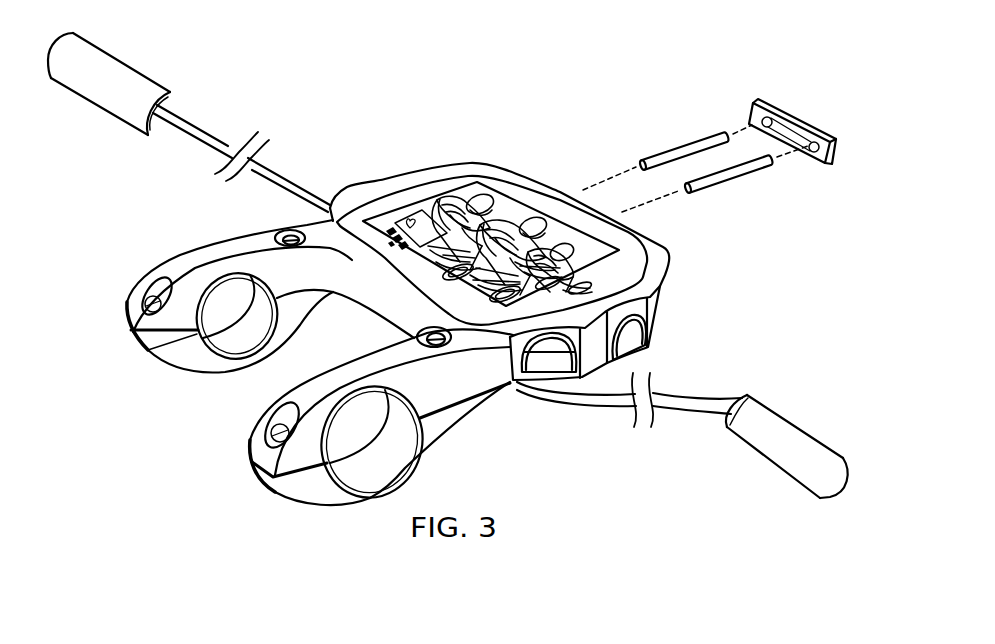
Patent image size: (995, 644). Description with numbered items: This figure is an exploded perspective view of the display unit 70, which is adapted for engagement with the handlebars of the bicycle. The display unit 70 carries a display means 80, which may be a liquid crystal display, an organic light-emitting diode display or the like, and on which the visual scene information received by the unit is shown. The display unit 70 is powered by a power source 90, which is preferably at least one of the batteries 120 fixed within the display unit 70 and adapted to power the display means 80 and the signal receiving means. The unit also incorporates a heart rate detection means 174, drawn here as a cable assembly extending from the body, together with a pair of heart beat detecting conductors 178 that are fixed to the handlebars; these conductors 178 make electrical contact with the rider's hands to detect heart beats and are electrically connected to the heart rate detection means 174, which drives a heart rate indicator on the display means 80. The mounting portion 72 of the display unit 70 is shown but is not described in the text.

The display unit 70 is at (570, 75).
The handlebar clamp mount 72 is at (140, 331).
The display means 80 is at (507, 207).
The power source 90 is at (746, 189).
The batteries 120 is at (692, 142).
The heart rate detection means 174 is at (127, 52).
The heart beat detecting conductors 178 is at (98, 105).